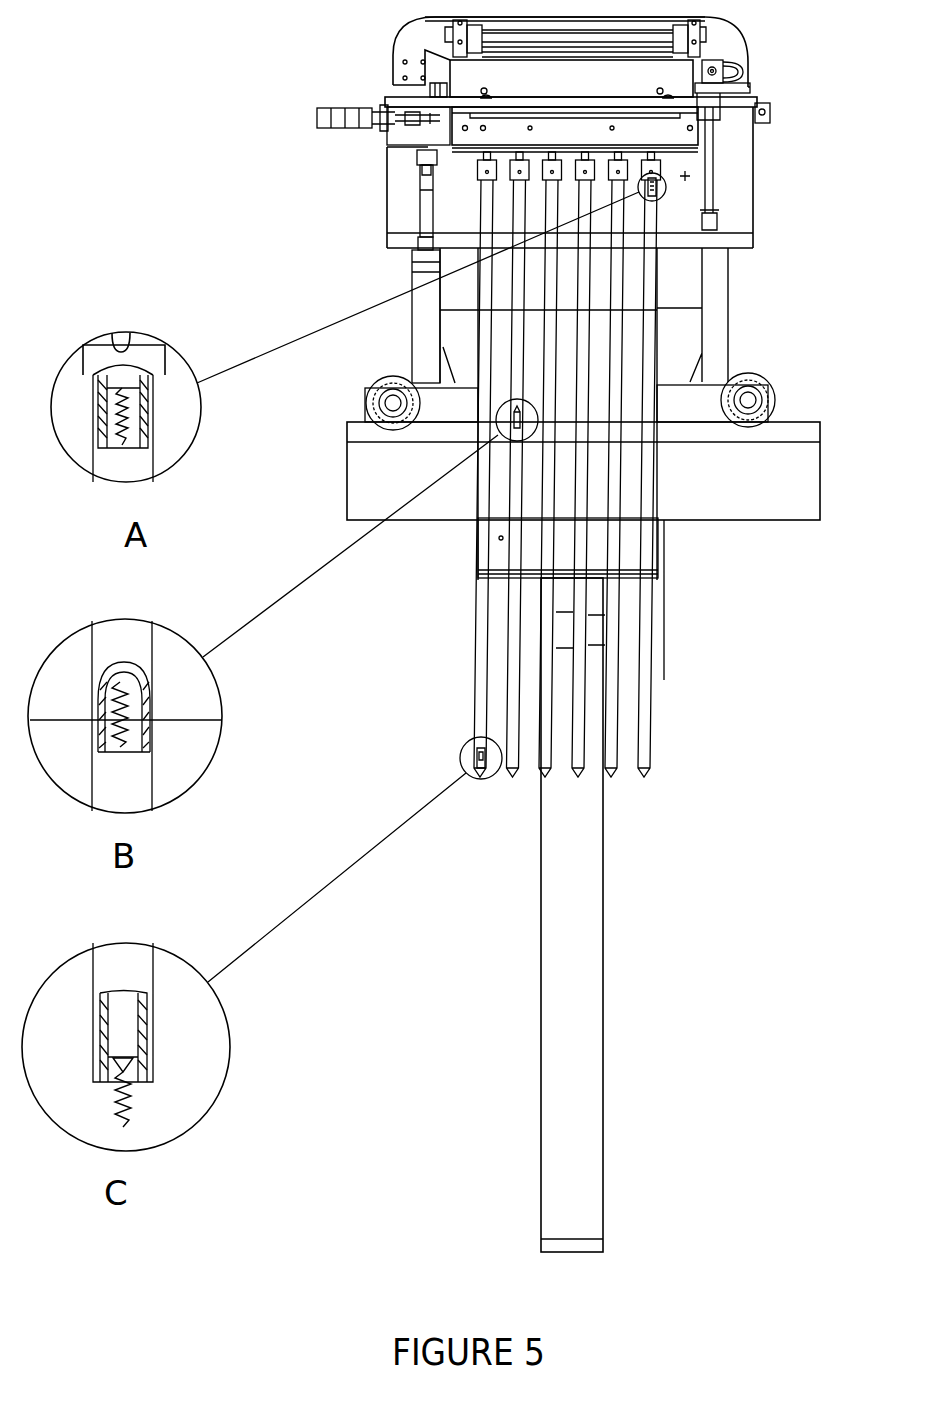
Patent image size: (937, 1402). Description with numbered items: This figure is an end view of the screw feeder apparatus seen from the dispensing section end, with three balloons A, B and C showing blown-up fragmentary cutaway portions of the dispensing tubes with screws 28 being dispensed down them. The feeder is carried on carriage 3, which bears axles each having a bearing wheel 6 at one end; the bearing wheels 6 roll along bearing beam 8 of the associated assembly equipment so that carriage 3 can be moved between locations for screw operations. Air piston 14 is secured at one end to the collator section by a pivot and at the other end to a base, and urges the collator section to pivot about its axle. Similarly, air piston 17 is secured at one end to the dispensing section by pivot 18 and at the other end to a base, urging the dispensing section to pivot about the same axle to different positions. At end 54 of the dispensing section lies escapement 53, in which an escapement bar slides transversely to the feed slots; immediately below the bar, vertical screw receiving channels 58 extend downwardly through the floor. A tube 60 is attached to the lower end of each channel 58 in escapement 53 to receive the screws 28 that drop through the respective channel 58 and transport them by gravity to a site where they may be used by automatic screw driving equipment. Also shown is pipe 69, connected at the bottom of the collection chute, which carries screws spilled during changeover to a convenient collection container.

The carriage 3 is at (794, 338).
The bearing wheel 6 is at (385, 380).
The bearing beam 8 is at (405, 503).
The air piston 14 is at (725, 312).
The air piston 17 is at (410, 268).
The pivot 18 is at (415, 160).
The screw 28 is at (85, 1097).
The escapement 53 is at (578, 120).
The end of dispensing section 54 is at (508, 126).
The screw receiving channel 58 is at (460, 163).
The tube 60 is at (644, 785).
The pipe 69 is at (588, 1058).